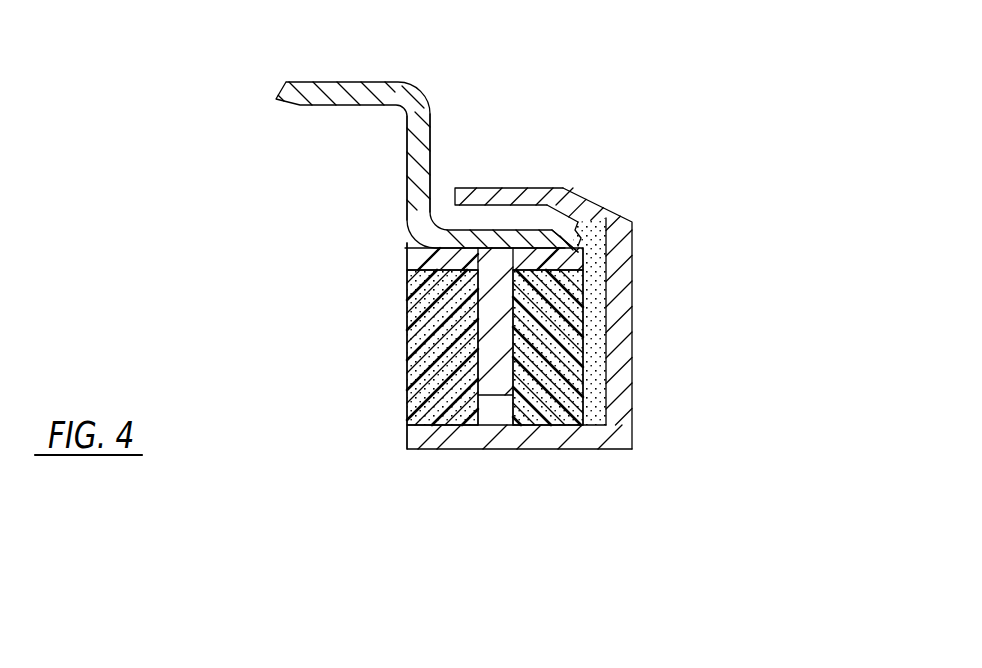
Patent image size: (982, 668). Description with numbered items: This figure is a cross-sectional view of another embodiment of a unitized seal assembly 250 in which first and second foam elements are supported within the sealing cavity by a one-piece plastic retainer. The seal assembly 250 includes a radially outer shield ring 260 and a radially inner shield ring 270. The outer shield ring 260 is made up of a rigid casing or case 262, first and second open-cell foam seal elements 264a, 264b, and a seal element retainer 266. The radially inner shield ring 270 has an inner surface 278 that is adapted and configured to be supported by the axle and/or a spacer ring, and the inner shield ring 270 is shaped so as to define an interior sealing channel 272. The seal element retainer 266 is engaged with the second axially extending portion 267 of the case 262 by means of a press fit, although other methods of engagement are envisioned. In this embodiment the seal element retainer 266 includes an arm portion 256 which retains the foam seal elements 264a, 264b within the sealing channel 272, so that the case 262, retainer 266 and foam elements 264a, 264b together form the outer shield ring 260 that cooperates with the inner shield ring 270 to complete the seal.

The seal assembly 250 is at (650, 122).
The arm portion 256 is at (500, 382).
The radially outer shield ring 260 is at (430, 101).
The case 262 is at (364, 82).
The first open-cell foam seal element 264a is at (407, 357).
The second open-cell foam seal element 264b is at (585, 400).
The seal element retainer 266 is at (410, 260).
The second axially extending portion 267 is at (508, 245).
The radially inner shield ring 270 is at (640, 328).
The interior sealing channel 272 is at (497, 217).
The inner surface 278 is at (527, 456).